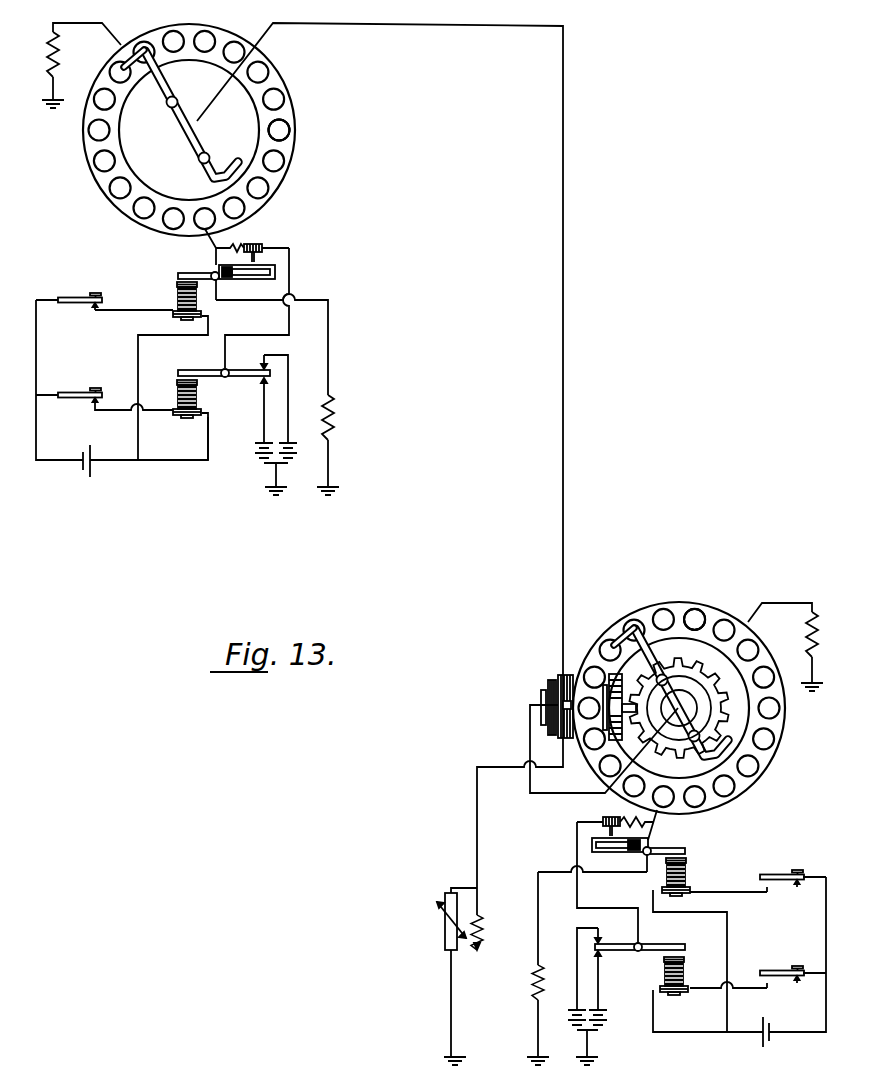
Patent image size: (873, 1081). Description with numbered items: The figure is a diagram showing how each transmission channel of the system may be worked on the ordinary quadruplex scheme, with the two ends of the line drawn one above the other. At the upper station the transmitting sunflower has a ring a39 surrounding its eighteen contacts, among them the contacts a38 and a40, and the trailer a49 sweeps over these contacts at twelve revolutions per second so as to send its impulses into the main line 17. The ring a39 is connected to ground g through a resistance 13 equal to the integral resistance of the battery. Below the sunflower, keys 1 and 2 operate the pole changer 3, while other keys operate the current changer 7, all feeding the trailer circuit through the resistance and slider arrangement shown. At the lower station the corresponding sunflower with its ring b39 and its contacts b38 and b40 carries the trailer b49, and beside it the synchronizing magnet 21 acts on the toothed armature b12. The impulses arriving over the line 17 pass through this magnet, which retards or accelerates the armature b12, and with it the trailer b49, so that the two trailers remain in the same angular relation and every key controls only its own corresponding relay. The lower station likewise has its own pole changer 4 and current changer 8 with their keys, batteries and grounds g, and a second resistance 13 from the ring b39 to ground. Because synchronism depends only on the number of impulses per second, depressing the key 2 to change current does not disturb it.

The resistance 13 is at (58, 64).
The ring a39 is at (293, 108).
The contacts a38 is at (279, 130).
The contact hole (station a) a40 is at (289, 132).
The trailer a49 is at (190, 131).
The main line 17 is at (565, 236).
The key 2 is at (77, 297).
The current changer 7 is at (174, 290).
The key 1 is at (76, 393).
The pole changer 3 is at (205, 378).
The ground g is at (320, 490).
The ring b39 is at (665, 604).
The contacts b38 is at (695, 613).
The contact hole (station b) b40 is at (704, 616).
The trailer b49 is at (621, 633).
The armature b12 is at (700, 663).
The magnet 21 is at (556, 679).
The current changer 8 is at (687, 852).
The pole changer 4 is at (656, 953).